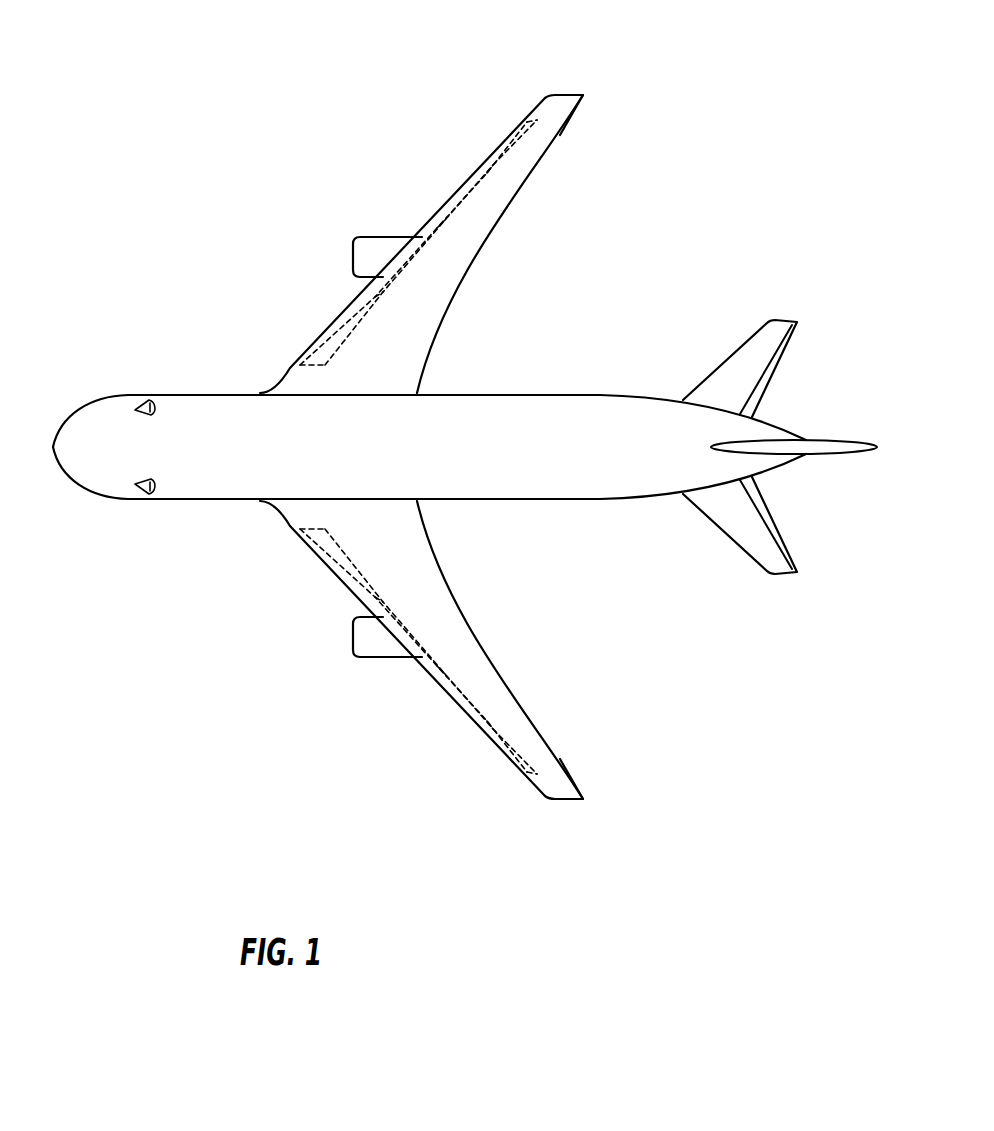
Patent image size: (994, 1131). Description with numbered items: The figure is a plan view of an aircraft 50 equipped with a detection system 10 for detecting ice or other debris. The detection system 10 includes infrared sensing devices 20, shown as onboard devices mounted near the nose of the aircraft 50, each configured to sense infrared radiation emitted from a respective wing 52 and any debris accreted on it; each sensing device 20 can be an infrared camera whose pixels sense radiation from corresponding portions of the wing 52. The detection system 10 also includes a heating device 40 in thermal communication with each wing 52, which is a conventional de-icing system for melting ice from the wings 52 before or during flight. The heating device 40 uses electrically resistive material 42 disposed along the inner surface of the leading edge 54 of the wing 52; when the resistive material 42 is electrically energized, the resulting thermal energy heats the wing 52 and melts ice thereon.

The detection system 10 is at (213, 688).
The infrared sensing device 20 is at (148, 400).
The heating device 40 is at (478, 142).
The electrically resistive material 42 is at (512, 138).
The aircraft 50 is at (702, 147).
The wing 52 is at (482, 228).
The leading edge 54 is at (425, 235).